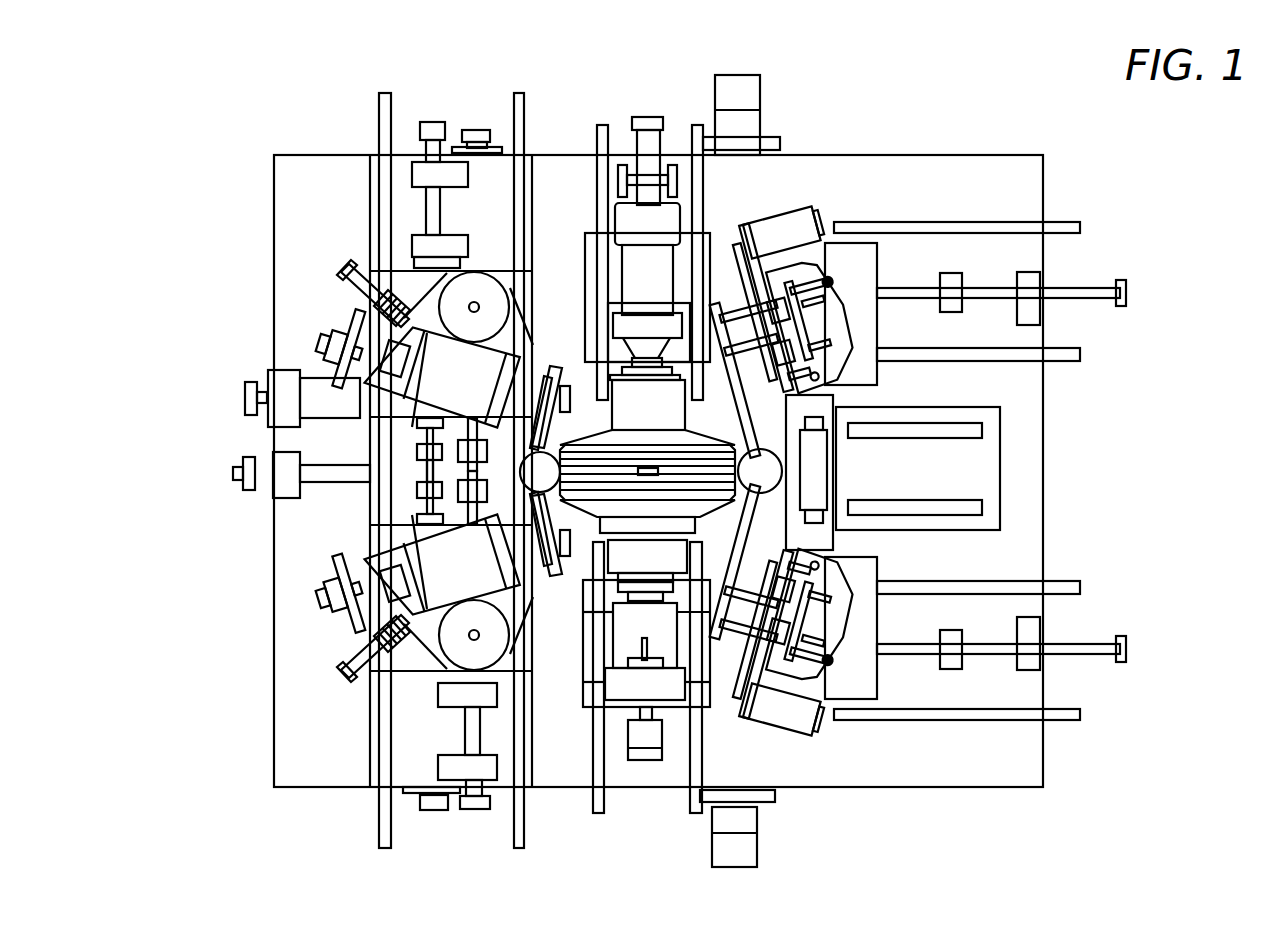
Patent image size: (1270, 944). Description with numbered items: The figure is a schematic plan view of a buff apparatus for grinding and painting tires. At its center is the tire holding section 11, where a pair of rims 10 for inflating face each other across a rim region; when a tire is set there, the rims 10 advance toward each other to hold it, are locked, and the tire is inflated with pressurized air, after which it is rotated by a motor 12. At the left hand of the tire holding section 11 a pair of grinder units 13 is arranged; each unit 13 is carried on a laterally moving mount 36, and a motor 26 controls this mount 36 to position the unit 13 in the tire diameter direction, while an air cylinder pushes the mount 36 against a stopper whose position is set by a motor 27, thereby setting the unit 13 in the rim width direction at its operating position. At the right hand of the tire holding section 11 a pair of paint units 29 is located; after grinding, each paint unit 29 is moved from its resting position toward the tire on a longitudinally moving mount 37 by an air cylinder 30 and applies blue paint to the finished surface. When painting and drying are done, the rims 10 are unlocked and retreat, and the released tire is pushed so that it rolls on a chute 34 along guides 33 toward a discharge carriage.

The rims for inflating 10 is at (605, 540).
The tire holding section 11 is at (590, 417).
The motor 12 is at (657, 272).
The grinder units 13 is at (343, 303).
The motor 26 is at (272, 383).
The motor 27 is at (493, 143).
The paint units 29 is at (875, 212).
The air cylinder 30 is at (1098, 290).
The guides 33 is at (982, 432).
The chute 34 is at (960, 533).
The laterally moving mount 36 is at (403, 280).
The longitudinally moving mount 37 is at (868, 270).